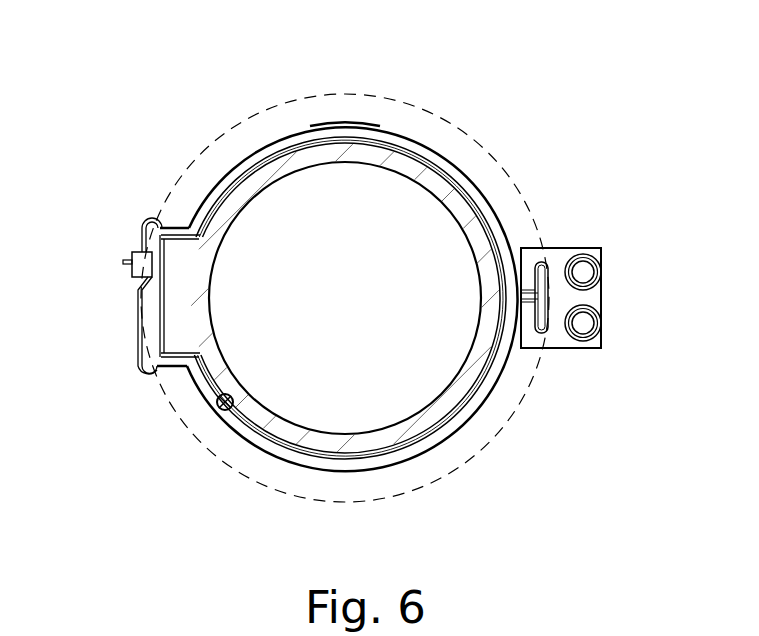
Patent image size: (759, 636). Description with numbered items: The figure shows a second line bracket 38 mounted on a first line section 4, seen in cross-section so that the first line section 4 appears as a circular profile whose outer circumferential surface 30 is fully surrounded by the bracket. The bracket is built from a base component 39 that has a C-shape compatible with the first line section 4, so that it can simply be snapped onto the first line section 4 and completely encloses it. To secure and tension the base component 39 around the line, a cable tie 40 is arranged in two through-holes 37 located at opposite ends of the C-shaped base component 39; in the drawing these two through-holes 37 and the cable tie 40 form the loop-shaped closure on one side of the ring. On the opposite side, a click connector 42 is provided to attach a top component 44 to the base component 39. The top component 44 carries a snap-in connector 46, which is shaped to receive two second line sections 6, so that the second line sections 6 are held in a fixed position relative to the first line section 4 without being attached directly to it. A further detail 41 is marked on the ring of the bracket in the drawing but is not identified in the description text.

The first line section 4 is at (263, 172).
The second line section 6 is at (583, 322).
The circumferential surface 30 is at (256, 445).
The through-holes 37 is at (165, 213).
The second line bracket 38 is at (352, 120).
The base component 39 is at (405, 143).
The cable tie 40 is at (141, 236).
The screw 41 is at (223, 410).
The click connector 42 is at (527, 322).
The top component 44 is at (557, 260).
The snap-in connector 46 is at (602, 254).